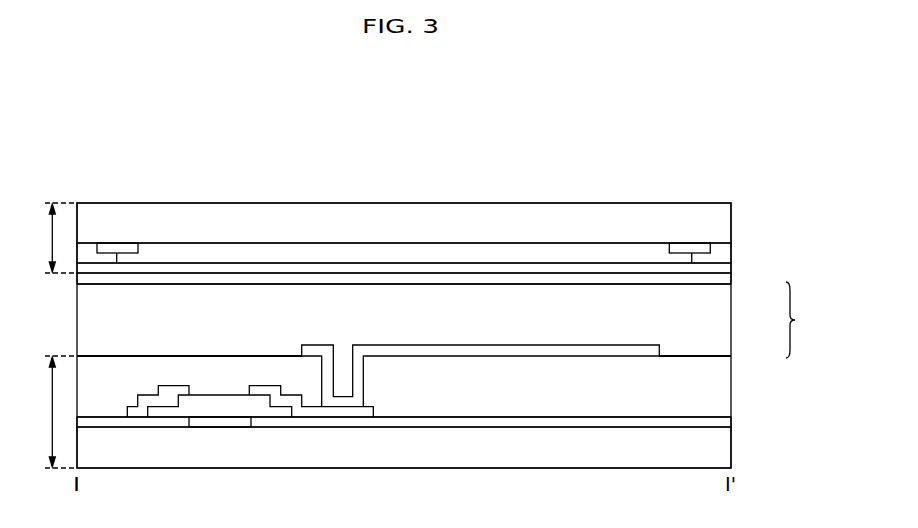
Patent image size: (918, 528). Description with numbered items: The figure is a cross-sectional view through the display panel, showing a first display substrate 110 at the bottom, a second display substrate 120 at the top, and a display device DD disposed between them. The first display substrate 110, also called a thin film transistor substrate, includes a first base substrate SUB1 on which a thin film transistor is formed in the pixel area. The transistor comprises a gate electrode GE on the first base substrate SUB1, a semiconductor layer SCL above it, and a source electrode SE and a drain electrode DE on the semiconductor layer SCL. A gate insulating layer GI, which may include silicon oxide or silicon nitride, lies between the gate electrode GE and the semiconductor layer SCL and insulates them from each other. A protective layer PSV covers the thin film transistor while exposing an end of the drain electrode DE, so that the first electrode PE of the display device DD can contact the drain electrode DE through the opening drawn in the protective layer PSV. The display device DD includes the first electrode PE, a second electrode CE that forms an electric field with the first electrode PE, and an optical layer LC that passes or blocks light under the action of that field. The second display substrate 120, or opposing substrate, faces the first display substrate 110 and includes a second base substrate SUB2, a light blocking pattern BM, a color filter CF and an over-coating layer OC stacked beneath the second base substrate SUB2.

The second base substrate SUB2 is at (728, 216).
The color filter CF is at (728, 253).
The light blocking pattern BM is at (699, 248).
The over-coating layer OC is at (728, 270).
The second electrode CE is at (728, 278).
The optical layer LC is at (728, 319).
The first electrode PE is at (659, 344).
The protective layer PSV is at (728, 382).
The gate insulating layer GI is at (731, 421).
The first base substrate SUB1 is at (731, 448).
The display device DD is at (804, 320).
The gate electrode GE is at (228, 423).
The semiconductor layer SCL is at (165, 412).
The source electrode SE is at (137, 412).
The drain electrode DE is at (333, 412).
The second display substrate 120 is at (51, 238).
The first display substrate 110 is at (51, 412).